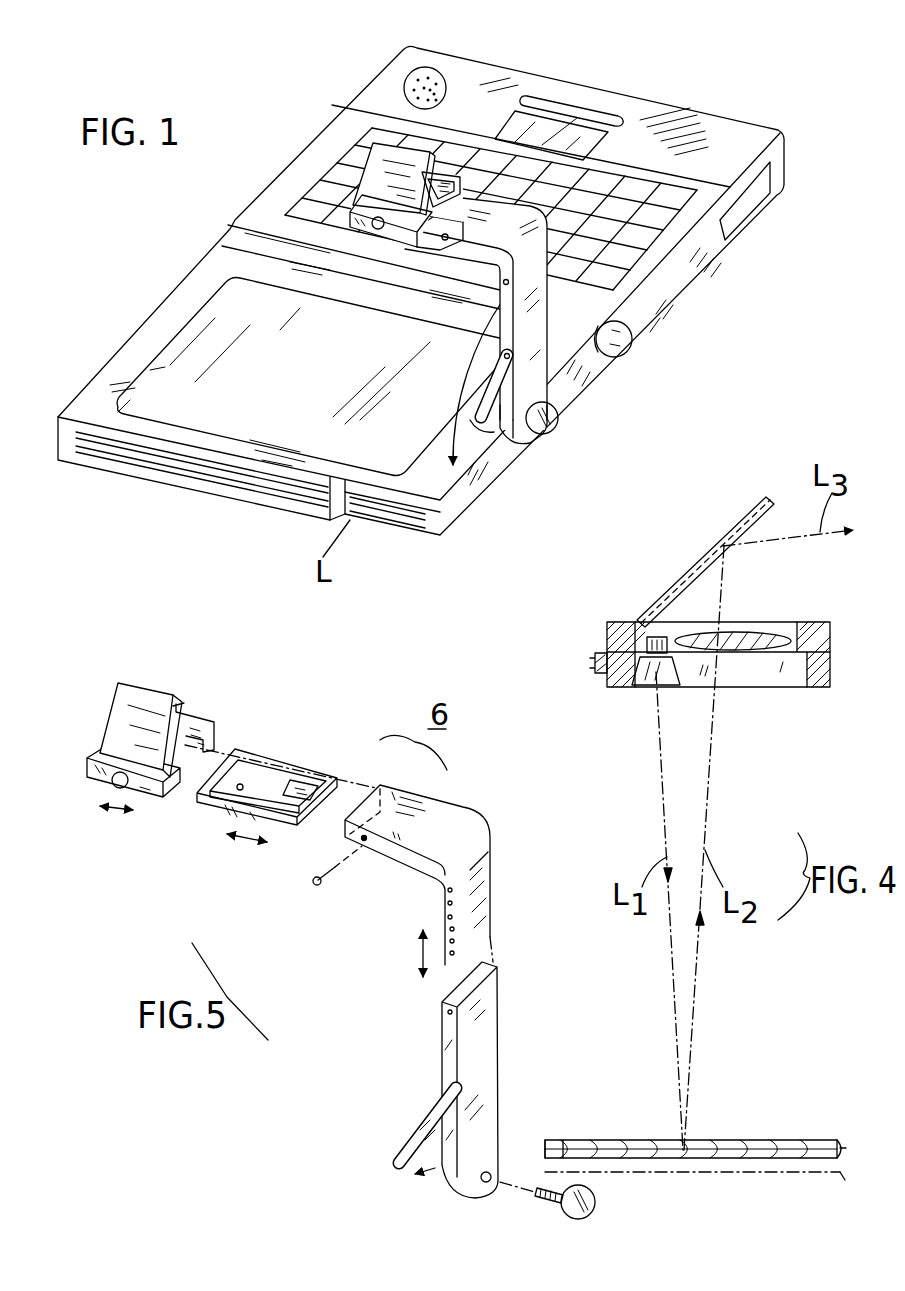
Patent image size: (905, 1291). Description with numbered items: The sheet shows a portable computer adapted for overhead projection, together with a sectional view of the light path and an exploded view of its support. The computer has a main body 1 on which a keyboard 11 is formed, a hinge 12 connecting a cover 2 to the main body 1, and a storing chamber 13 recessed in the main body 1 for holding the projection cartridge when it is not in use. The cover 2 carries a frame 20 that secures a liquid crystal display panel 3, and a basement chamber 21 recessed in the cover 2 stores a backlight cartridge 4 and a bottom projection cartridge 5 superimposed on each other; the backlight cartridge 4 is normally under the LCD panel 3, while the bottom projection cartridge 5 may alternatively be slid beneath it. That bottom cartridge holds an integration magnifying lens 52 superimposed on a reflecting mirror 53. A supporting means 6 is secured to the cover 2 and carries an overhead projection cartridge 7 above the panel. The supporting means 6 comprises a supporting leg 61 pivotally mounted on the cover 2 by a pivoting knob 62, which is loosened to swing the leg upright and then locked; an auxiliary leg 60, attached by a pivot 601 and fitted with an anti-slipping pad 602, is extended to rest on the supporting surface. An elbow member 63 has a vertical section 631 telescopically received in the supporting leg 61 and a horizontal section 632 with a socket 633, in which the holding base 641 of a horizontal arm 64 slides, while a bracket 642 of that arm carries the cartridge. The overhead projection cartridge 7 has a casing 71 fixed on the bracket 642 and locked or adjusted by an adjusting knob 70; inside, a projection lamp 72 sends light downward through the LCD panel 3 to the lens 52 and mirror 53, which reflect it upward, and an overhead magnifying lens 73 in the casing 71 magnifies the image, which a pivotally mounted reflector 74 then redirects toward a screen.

In FIG. 1, the main body 1 is at (745, 146).
In FIG. 1, the cover 2 is at (518, 457).
In FIG. 1, the liquid crystal display panel 3 is at (173, 366).
In FIG. 4, the liquid crystal display panel 3 is at (748, 1140).
In FIG. 1, the backlight cartridge 4 is at (143, 463).
In FIG. 4, the backlight cartridge 4 is at (826, 1175).
In FIG. 1, the bottom projection cartridge 5 is at (112, 445).
In FIG. 4, the bottom projection cartridge 5 is at (840, 1150).
In FIG. 1, the supporting means 6 is at (567, 281).
In FIG. 5, the supporting means 6 is at (439, 1021).
In FIG. 1, the overhead projection cartridge 7 is at (352, 131).
In FIG. 4, the overhead projection cartridge 7 is at (713, 538).
In FIG. 5, the overhead projection cartridge 7 is at (152, 772).
In FIG. 1, the keyboard 11 is at (652, 230).
In FIG. 1, the hinge 12 is at (632, 340).
In FIG. 1, the storing chamber 13 is at (750, 200).
In FIG. 1, the frame 20 is at (200, 293).
In FIG. 1, the basement chamber 21 is at (430, 537).
In FIG. 4, the integration magnifying lens 52 is at (563, 1140).
In FIG. 4, the reflecting mirror 53 is at (548, 1140).
In FIG. 1, the auxiliary leg 60 is at (510, 422).
In FIG. 5, the auxiliary leg 60 is at (398, 1162).
In FIG. 1, the supporting leg 61 is at (568, 412).
In FIG. 5, the supporting leg 61 is at (466, 1074).
In FIG. 1, the pivoting knob 62 is at (552, 435).
In FIG. 5, the pivoting knob 62 is at (540, 1200).
In FIG. 1, the elbow member 63 is at (543, 177).
In FIG. 5, the elbow member 63 is at (425, 881).
In FIG. 1, the horizontal arm 64 is at (455, 195).
In FIG. 5, the horizontal arm 64 is at (293, 783).
In FIG. 4, the adjusting knob 70 is at (593, 663).
In FIG. 5, the adjusting knob 70 is at (116, 786).
In FIG. 1, the casing 71 is at (353, 220).
In FIG. 4, the casing 71 is at (830, 647).
In FIG. 5, the casing 71 is at (88, 763).
In FIG. 1, the projection lamp 72 is at (395, 222).
In FIG. 4, the projection lamp 72 is at (652, 682).
In FIG. 5, the projection lamp 72 is at (148, 800).
In FIG. 1, the overhead magnifying lens 73 is at (435, 173).
In FIG. 4, the overhead magnifying lens 73 is at (757, 623).
In FIG. 5, the overhead magnifying lens 73 is at (213, 728).
In FIG. 1, the reflector 74 is at (387, 146).
In FIG. 4, the reflector 74 is at (768, 513).
In FIG. 5, the reflector 74 is at (120, 690).
In FIG. 5, the pivot 601 is at (447, 1088).
In FIG. 5, the anti-slipping pad 602 is at (400, 1168).
In FIG. 5, the vertical section 631 is at (480, 922).
In FIG. 5, the horizontal section 632 is at (381, 827).
In FIG. 5, the socket 633 is at (352, 823).
In FIG. 5, the holding base 641 is at (310, 785).
In FIG. 5, the bracket 642 is at (237, 792).